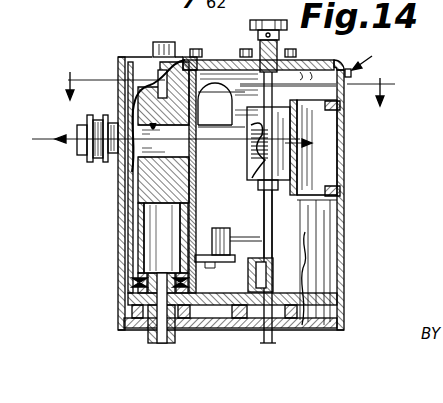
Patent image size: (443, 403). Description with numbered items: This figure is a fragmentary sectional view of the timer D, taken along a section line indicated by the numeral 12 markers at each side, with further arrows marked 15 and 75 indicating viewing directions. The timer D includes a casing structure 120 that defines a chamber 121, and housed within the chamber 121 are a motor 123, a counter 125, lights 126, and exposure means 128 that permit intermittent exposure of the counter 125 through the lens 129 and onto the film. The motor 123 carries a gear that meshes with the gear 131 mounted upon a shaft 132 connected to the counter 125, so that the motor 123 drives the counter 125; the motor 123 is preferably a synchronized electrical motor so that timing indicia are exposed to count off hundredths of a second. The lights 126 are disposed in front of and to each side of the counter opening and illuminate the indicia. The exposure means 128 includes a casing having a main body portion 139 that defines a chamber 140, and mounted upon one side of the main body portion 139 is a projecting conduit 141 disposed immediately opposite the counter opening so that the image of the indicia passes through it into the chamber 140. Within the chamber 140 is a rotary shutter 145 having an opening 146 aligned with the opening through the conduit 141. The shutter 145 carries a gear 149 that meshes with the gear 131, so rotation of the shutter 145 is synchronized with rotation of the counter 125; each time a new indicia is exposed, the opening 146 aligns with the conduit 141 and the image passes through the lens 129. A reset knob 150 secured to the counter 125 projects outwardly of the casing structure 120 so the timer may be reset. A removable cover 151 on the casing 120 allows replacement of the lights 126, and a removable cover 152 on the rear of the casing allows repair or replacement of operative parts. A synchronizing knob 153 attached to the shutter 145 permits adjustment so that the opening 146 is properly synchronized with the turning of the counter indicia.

The casing structure 120 is at (335, 320).
The chamber 121 is at (310, 73).
The motor 123 is at (308, 236).
The counter 125 is at (278, 125).
The lights 126 is at (232, 216).
The exposure means 128 is at (137, 238).
The lens 129 is at (95, 165).
The gear 131 is at (232, 330).
The shaft 132 is at (268, 343).
The main body portion 139 is at (194, 56).
The chamber 140 is at (195, 210).
The projecting conduit 141 is at (228, 100).
The rotary shutter 145 is at (150, 170).
The opening 146 is at (152, 126).
The gear 149 is at (130, 299).
The reset knob 150 is at (260, 20).
The removable cover 151 is at (218, 58).
The removable cover 152 is at (340, 153).
The synchronizing knob 153 is at (165, 40).
The section line 12- 12 is at (227, 93).
The section line 15 is at (154, 144).
The direction arrow 75 is at (306, 152).
The timer D is at (371, 56).